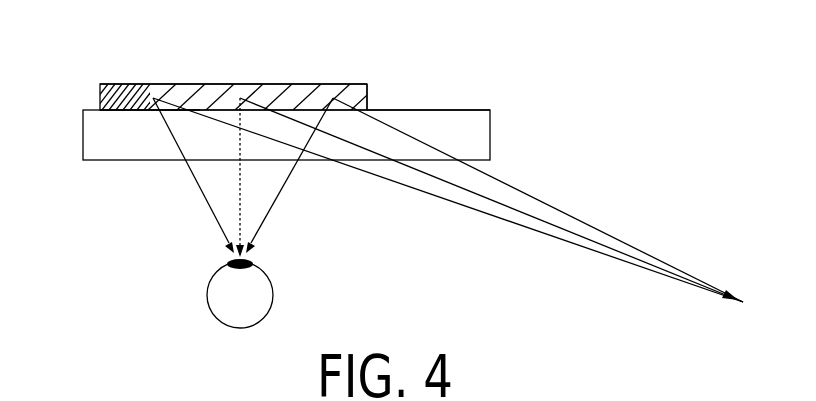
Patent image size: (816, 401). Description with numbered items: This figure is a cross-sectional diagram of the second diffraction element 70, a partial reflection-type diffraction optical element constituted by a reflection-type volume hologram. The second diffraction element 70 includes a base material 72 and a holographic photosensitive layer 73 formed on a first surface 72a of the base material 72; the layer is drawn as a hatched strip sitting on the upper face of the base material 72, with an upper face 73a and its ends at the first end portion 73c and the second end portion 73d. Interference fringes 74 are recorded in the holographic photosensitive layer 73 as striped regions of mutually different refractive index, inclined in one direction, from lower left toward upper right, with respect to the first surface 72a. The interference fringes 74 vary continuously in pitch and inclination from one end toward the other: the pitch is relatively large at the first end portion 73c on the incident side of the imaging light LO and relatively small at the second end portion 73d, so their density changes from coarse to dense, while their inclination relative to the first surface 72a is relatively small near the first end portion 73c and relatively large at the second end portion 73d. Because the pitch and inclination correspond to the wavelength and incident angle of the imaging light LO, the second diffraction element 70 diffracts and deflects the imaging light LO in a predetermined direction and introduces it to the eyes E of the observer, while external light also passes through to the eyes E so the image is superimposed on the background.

The second diffraction element 70 is at (216, 72).
The base material 72 is at (490, 125).
The first surface 72a is at (457, 109).
The holographic photosensitive layer 73 is at (368, 100).
The incident surface 73a is at (276, 84).
The first end portion 73c is at (368, 97).
The second end portion 73d is at (101, 97).
The interference fringes 74 is at (165, 100).
The imaging light LO is at (585, 223).
The eyes E is at (207, 295).